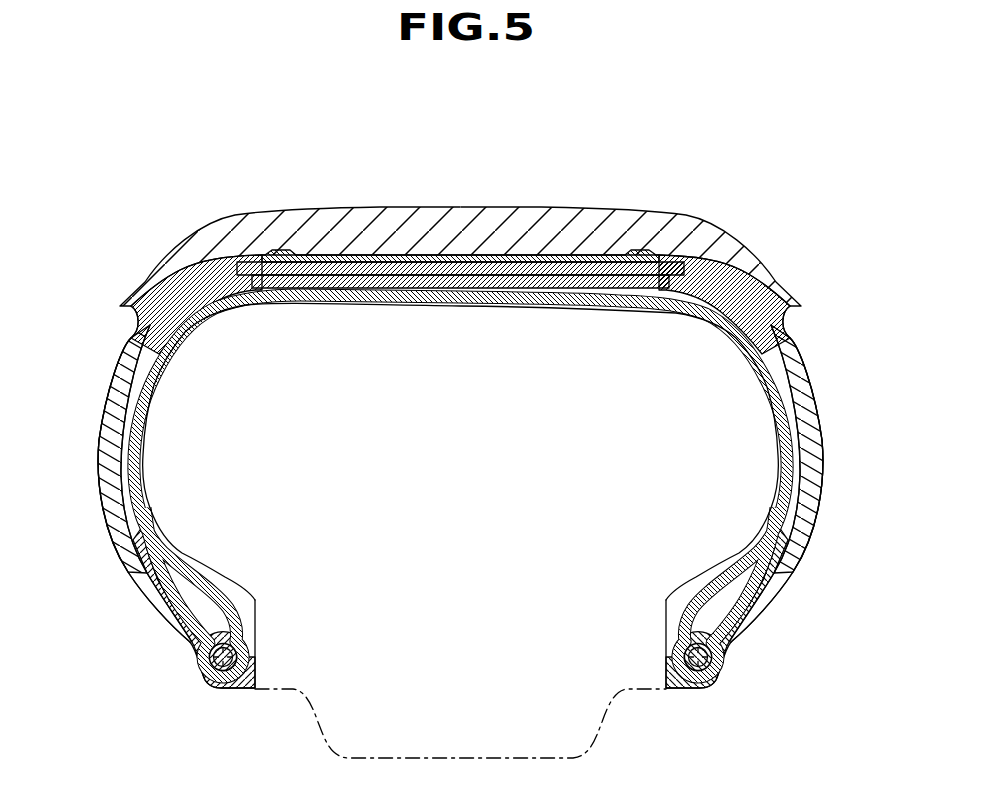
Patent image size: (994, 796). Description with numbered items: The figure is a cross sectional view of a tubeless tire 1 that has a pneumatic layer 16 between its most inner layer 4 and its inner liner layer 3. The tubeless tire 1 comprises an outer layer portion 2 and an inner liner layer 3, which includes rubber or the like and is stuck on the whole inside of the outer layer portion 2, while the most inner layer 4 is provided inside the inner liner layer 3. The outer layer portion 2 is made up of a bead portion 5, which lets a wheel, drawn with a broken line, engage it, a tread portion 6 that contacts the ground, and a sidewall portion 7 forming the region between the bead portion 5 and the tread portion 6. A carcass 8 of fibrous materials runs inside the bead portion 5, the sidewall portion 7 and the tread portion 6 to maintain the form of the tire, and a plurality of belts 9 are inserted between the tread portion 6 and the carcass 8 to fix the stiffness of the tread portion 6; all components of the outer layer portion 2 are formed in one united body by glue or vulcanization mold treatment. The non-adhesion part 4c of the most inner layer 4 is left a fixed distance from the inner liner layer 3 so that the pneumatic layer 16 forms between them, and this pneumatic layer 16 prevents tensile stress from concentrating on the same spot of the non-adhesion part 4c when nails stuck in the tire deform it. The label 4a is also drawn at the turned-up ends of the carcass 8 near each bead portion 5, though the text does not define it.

The tubeless tire 1 is at (108, 372).
The outer layer portion 2 is at (815, 369).
The inner liner layer 3 is at (660, 647).
The most inner layer 4 is at (787, 460).
The carcass turn-up portion 4a is at (152, 510).
The non-adhesion part 4c is at (460, 342).
The bead portion 5 is at (196, 672).
The tread portion 6 is at (461, 207).
The sidewall portion 7 is at (102, 458).
The carcass 8 is at (228, 616).
The belts 9 is at (138, 314).
The pneumatic layer 16 is at (572, 287).